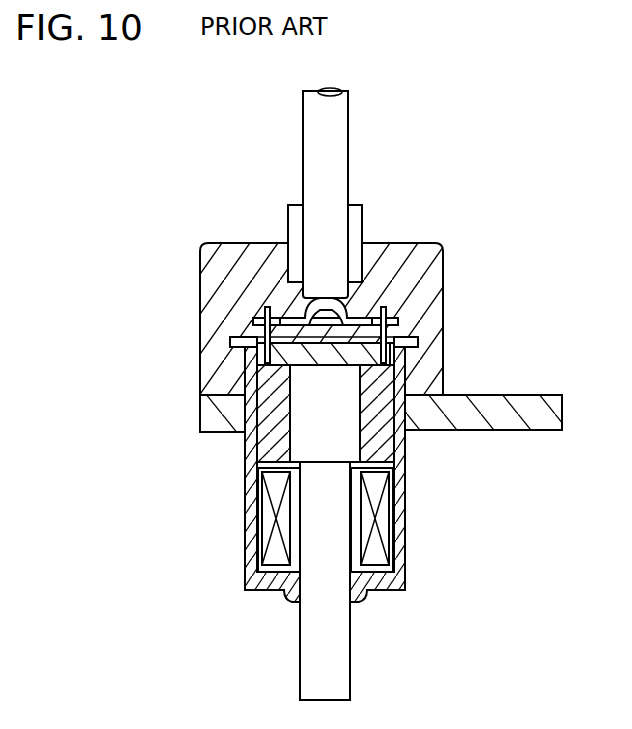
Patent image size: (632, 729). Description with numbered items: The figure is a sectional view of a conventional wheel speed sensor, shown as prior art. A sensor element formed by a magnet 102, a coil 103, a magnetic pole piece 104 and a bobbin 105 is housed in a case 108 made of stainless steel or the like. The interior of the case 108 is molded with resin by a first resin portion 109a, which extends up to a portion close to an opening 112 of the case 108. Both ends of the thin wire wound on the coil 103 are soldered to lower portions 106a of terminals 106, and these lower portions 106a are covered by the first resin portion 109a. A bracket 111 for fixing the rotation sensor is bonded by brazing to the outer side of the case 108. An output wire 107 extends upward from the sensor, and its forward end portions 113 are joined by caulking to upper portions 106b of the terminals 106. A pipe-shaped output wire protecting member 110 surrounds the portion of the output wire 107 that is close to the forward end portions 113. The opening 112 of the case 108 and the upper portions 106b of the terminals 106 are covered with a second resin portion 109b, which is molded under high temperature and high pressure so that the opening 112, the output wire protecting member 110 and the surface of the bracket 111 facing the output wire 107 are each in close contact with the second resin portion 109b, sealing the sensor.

The magnet 102 is at (307, 427).
The coil 103 is at (266, 535).
The magnetic pole piece 104 is at (333, 655).
The bobbin 105 is at (268, 455).
The terminals 106 is at (396, 325).
The lower portions of terminals 106a is at (388, 362).
The upper portions of terminals 106b is at (385, 308).
The output wire 107 is at (332, 128).
The case 108 is at (406, 503).
The first resin portion 109a is at (272, 337).
The second resin portion 109b is at (436, 246).
The output wire protecting member 110 is at (362, 220).
The bracket 111 is at (503, 422).
The opening of the case 112 is at (232, 341).
The forward end portions of the output wire 113 is at (300, 297).